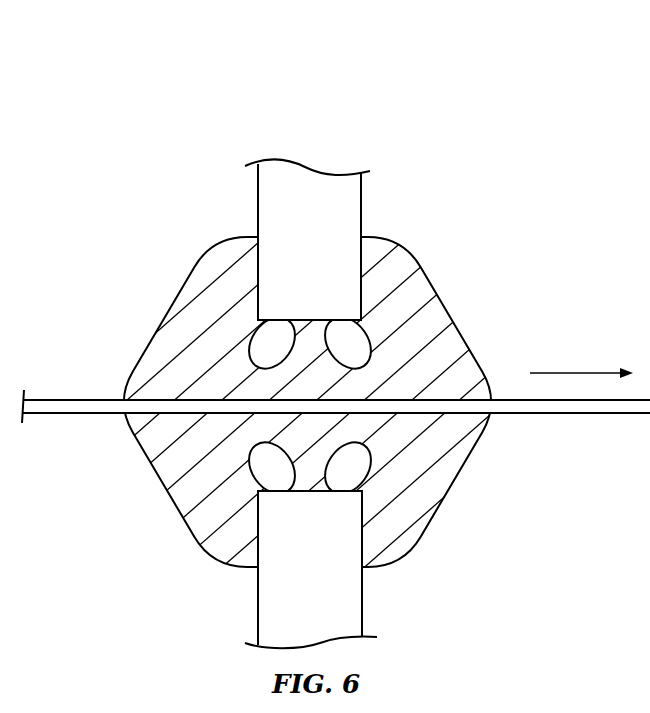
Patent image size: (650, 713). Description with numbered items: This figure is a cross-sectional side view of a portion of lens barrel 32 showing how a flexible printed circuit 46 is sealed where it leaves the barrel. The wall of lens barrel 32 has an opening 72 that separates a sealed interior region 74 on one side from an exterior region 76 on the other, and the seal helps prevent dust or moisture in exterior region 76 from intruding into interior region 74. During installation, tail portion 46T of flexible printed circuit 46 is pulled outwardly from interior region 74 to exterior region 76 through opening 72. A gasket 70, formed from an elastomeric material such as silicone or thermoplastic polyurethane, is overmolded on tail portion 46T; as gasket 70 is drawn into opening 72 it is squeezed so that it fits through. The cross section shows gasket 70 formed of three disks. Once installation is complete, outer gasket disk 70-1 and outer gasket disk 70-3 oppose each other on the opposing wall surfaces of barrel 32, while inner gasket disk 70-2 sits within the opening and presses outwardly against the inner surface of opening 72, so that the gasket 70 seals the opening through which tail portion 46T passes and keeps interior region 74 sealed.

The lens barrel 32 is at (343, 203).
The flexible printed circuit 46 is at (74, 414).
The tail portion 46T is at (570, 414).
The gasket 70 is at (180, 310).
The outer gasket disk 70-1 is at (233, 267).
The inner gasket disk 70-2 is at (325, 380).
The outer gasket disk 70-3 is at (410, 292).
The opening 72 is at (346, 487).
The interior region 74 is at (48, 269).
The exterior region 76 is at (578, 79).